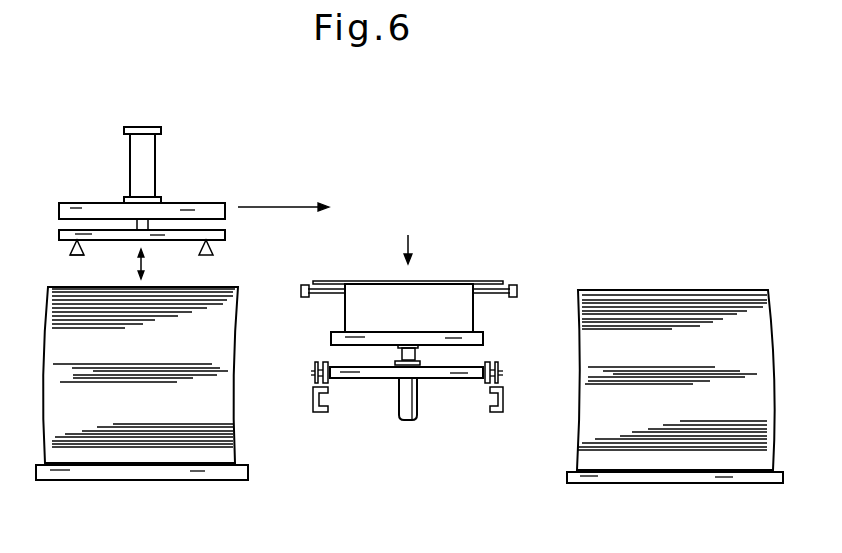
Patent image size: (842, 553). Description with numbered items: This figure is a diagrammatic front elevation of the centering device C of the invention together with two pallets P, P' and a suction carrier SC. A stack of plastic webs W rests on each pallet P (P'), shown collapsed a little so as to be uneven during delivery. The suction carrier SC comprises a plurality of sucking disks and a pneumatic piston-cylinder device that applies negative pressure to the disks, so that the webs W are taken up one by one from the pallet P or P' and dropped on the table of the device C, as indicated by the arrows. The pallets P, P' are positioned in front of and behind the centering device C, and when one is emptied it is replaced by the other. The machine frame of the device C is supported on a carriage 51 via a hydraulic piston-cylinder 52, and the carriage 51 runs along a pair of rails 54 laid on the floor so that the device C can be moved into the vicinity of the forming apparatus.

The suction carrier SC is at (142, 203).
The centering device C is at (409, 283).
The plastic webs W is at (243, 446).
The pallet P is at (142, 498).
The pallet P' is at (675, 501).
The carriage 51 is at (445, 380).
The hydraulic piston-cylinder 52 is at (398, 356).
The rails 54 is at (323, 415).